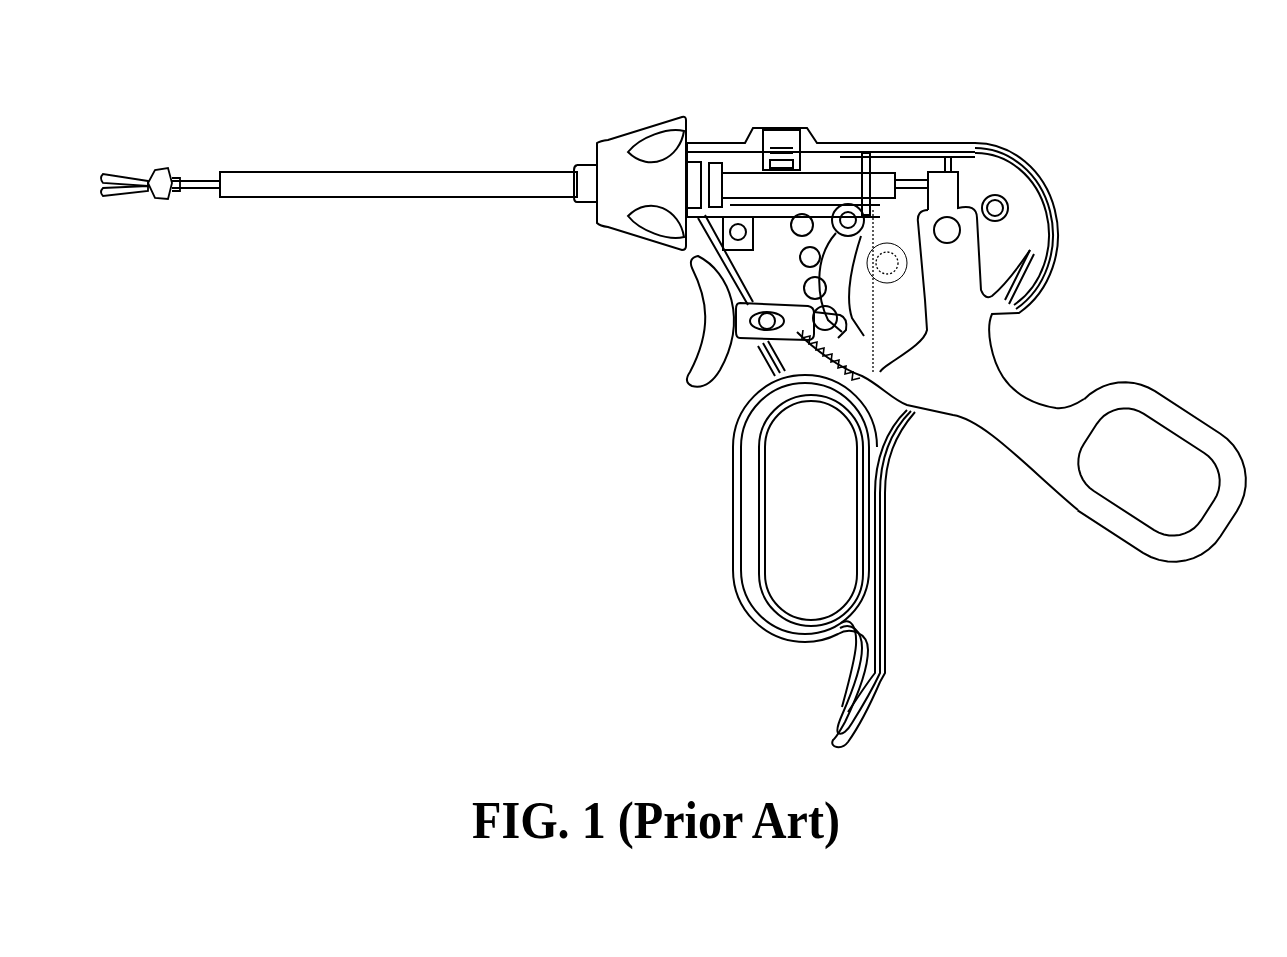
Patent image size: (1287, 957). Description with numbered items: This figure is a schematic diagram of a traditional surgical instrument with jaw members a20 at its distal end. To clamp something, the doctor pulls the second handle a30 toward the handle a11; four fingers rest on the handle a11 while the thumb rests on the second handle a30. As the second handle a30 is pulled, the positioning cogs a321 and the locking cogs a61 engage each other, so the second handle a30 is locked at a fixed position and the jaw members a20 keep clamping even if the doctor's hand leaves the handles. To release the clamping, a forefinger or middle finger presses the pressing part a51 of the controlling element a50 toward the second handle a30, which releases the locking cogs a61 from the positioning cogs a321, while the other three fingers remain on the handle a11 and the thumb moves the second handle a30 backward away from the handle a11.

The end effector jaws a20 is at (133, 157).
The trigger assembly a50 is at (692, 323).
The trigger face a51 is at (683, 383).
The pawl lever a61 is at (862, 348).
The ratchet teeth a321 is at (870, 355).
The movable handle a11 is at (890, 575).
The stationary handle ring a30 is at (1083, 500).